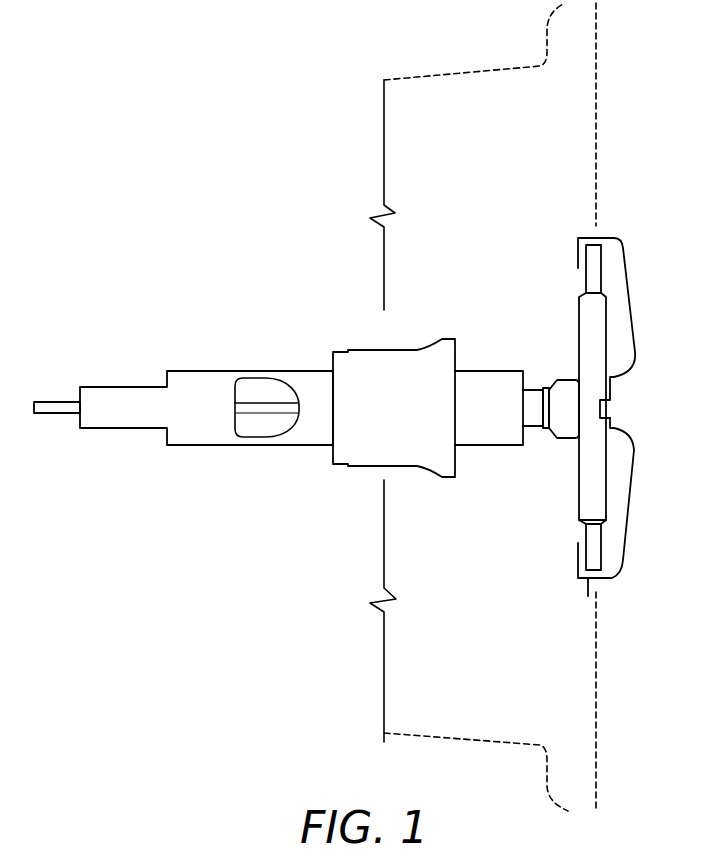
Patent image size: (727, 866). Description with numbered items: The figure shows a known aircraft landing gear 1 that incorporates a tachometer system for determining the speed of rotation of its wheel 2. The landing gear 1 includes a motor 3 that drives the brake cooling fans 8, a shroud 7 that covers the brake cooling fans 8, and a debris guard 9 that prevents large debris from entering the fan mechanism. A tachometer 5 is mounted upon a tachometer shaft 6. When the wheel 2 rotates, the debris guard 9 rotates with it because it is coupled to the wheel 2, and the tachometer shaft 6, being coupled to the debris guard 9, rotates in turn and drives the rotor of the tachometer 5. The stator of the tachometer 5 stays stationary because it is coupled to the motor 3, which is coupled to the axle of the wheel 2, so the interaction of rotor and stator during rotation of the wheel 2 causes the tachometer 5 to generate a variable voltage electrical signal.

The landing gear 1 is at (355, 439).
The wheel 2 is at (402, 80).
The motor 3 is at (362, 360).
The tachometer 5 is at (190, 437).
The tachometer shaft 6 is at (278, 410).
The shroud 7 is at (588, 238).
The brake cooling fans 8 is at (601, 340).
The debris guard 9 is at (630, 525).